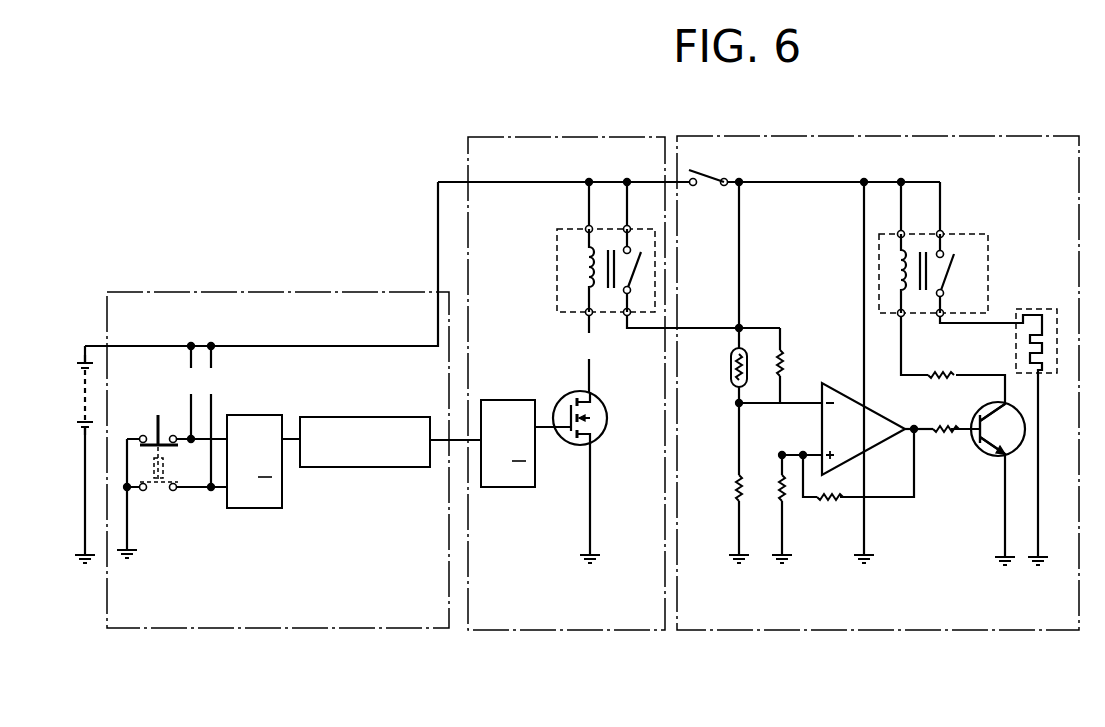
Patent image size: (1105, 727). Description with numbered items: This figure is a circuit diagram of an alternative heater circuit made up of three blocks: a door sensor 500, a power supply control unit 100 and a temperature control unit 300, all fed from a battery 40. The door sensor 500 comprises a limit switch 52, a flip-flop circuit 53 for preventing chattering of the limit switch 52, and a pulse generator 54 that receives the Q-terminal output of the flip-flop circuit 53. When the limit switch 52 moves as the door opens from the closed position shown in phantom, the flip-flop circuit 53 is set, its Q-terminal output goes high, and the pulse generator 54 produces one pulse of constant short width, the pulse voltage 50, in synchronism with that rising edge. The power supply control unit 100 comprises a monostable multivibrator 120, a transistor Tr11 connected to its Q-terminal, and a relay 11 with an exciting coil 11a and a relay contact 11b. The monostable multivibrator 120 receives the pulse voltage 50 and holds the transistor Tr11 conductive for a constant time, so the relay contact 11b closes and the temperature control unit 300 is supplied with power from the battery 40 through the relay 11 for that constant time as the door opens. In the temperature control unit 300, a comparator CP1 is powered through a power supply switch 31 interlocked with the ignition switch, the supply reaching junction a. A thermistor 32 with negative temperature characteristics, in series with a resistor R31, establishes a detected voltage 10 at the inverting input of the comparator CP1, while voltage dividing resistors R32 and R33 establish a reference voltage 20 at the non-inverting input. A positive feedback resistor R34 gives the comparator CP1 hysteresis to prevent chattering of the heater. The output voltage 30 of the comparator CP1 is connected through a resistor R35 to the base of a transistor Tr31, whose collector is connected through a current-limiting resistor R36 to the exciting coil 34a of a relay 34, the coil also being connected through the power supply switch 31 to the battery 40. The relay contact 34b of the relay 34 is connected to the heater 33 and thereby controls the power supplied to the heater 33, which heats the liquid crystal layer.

The door sensor 500 is at (133, 290).
The power supply control unit 100 is at (502, 136).
The temperature control unit 300 is at (1037, 137).
The battery 40 is at (78, 388).
The limit switch 52 is at (158, 415).
The flip-flop circuit 53 is at (270, 508).
The pulse generator 54 is at (415, 467).
The voltage V50 50 is at (439, 438).
The relay 11 is at (557, 243).
The relay coil 11a is at (589, 263).
The relay contact 11b is at (623, 297).
The monostable multivibrator 120 is at (522, 487).
The transistor Tr11 is at (598, 436).
The power supply switch 31 is at (715, 173).
The junction point a is at (738, 327).
The detected voltage V10 10 is at (758, 403).
The thermistor 32 is at (730, 380).
The resistor R31 is at (737, 485).
The voltage dividing resistor R32 is at (790, 362).
The voltage dividing resistor R33 is at (773, 497).
The positive feedback resistor R34 is at (823, 507).
The resistor R35 is at (937, 438).
The current-limiting resistor R36 is at (937, 372).
The reference voltage V20 20 is at (793, 450).
The comparator CP1 is at (863, 429).
The output voltage V30 30 is at (914, 427).
The transistor Tr31 is at (990, 458).
The relay 34 is at (983, 234).
The exciting coil 34a is at (903, 272).
The relay contact 34b is at (955, 275).
The heater 33 is at (1017, 310).